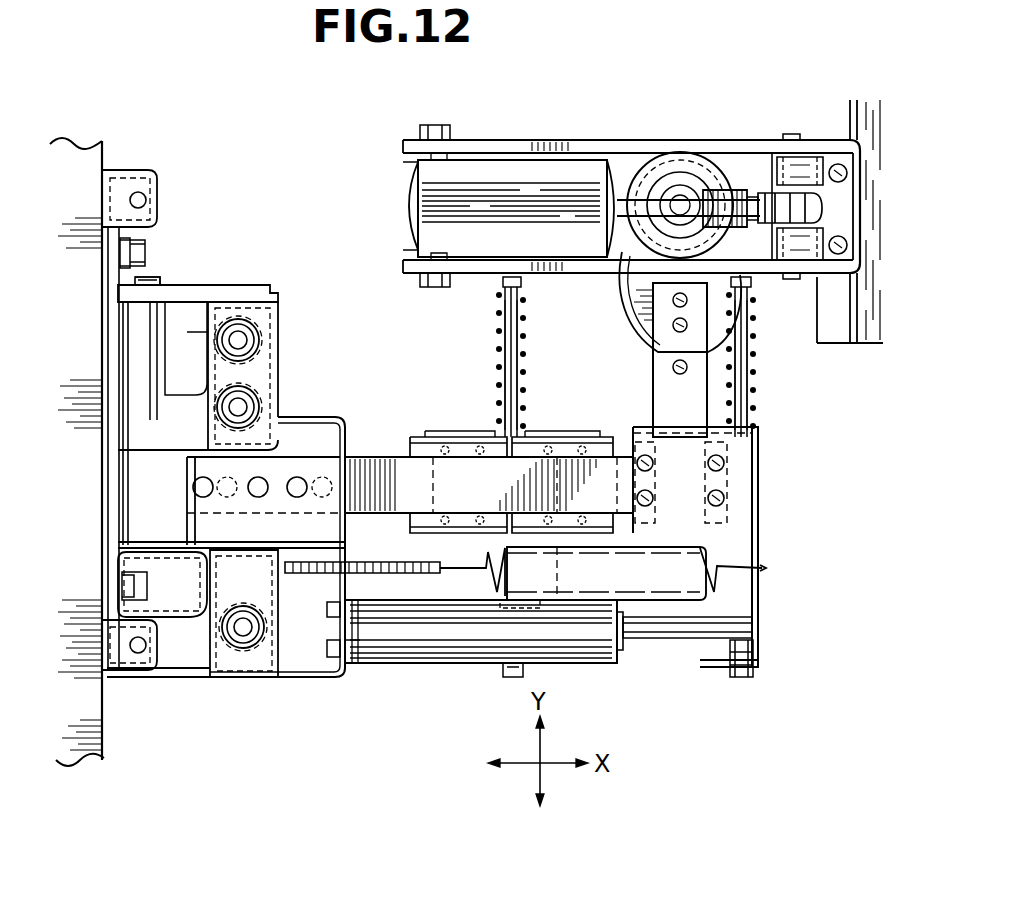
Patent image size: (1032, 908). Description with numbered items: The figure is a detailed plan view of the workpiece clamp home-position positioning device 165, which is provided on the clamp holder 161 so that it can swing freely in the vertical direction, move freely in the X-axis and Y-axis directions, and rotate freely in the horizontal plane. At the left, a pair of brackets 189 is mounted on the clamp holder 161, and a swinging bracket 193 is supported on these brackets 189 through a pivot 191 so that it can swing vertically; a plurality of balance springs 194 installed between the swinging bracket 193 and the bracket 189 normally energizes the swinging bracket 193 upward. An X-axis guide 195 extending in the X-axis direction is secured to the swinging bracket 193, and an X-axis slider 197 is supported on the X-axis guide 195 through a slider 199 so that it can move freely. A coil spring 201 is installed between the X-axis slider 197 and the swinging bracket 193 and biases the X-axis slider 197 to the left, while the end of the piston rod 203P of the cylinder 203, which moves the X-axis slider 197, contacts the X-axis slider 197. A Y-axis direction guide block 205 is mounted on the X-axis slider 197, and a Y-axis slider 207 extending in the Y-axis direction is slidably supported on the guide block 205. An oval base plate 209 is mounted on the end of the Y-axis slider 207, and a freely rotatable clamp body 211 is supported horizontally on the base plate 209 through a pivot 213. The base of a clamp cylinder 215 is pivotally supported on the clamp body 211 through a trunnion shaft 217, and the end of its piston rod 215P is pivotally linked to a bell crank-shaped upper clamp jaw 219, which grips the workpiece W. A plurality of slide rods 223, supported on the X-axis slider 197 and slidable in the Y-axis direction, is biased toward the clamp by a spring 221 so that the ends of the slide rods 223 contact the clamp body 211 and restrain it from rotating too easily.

The clamp holder 161 is at (104, 742).
The workpiece clamp home-position positioning device 165 is at (700, 132).
The brackets 189 is at (214, 292).
The pivot 191 is at (150, 280).
The swinging bracket 193 is at (311, 418).
The balance springs 194 is at (256, 392).
The X-axis guide 195 is at (380, 456).
The X-axis slider 197 is at (763, 498).
The slider 199 is at (458, 420).
The coil spring 201 is at (610, 602).
The cylinder 203 is at (453, 628).
The piston rod 203P is at (678, 628).
The Y-axis direction guide block 205 is at (740, 450).
The Y-axis slider 207 is at (652, 342).
The oval base plate 209 is at (630, 308).
The clamp body 211 is at (550, 130).
The pivot 213 is at (652, 132).
The clamp cylinder 215 is at (490, 172).
The piston rod 215P is at (736, 134).
The trunnion shaft 217 is at (420, 164).
The upper clamp jaw 219 is at (820, 160).
The spring 221 is at (497, 332).
The slide rods 223 is at (506, 364).
The workpiece W is at (858, 345).